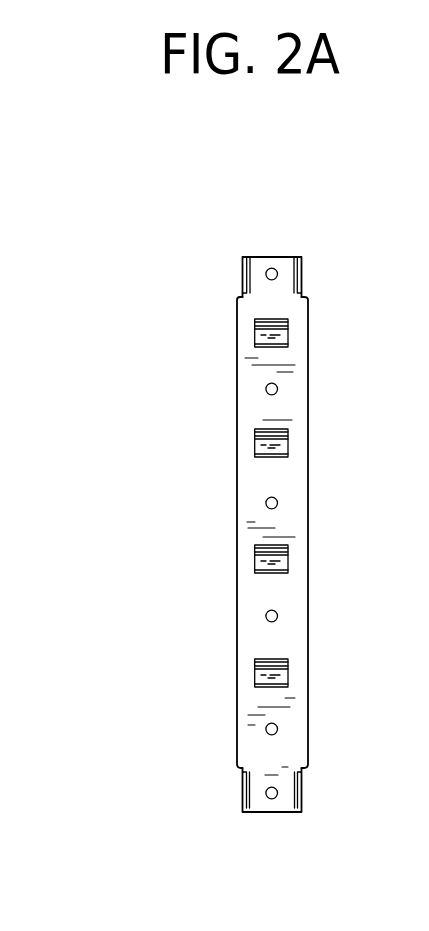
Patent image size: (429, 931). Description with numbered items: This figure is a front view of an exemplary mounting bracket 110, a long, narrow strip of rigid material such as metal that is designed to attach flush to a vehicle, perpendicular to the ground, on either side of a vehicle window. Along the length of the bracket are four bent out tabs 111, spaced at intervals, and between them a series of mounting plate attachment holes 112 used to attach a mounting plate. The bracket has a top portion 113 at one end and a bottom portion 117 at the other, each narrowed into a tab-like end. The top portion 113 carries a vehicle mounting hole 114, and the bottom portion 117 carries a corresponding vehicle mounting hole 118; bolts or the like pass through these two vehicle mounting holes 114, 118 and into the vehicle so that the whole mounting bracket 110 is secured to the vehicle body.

The mounting bracket 110 is at (123, 206).
The bent out tab 111 is at (255, 335).
The mounting plate attachment hole 112 is at (278, 386).
The top portion 113 is at (287, 256).
The vehicle mounting hole 114 is at (272, 268).
The bottom portion 117 is at (273, 800).
The vehicle mounting hole 118 is at (271, 800).